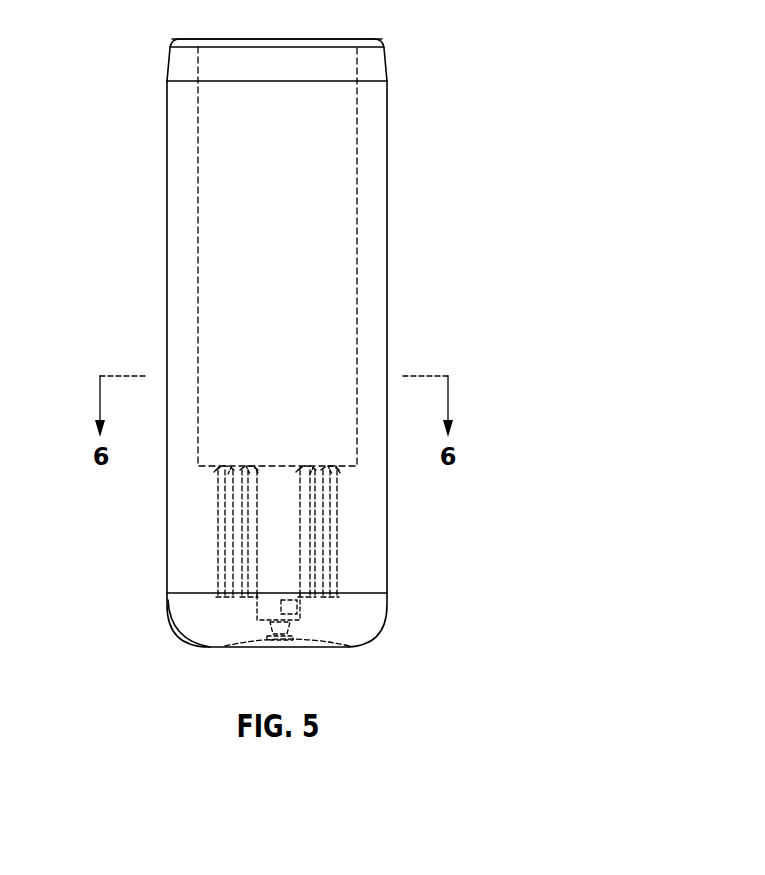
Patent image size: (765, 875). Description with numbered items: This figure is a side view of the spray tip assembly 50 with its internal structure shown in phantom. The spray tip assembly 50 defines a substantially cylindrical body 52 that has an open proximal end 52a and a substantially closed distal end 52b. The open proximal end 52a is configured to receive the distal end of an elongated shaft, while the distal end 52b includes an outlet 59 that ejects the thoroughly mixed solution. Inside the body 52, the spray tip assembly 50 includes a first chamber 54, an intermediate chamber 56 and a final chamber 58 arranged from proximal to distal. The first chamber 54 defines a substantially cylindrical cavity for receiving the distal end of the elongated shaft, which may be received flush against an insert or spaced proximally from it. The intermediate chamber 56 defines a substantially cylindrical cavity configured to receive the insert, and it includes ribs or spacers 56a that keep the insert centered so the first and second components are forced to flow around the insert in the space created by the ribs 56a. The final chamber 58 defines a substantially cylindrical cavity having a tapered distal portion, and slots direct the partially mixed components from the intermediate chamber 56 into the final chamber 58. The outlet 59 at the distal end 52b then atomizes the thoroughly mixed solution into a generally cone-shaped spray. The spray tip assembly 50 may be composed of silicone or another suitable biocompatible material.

The spray tip assembly 50 is at (299, 359).
The cylindrical body 52 is at (168, 253).
The open proximal end 52a is at (385, 58).
The closed distal end 52b is at (176, 630).
The first chamber 54 is at (349, 268).
The intermediate chamber 56 is at (218, 490).
The ribs 56a is at (218, 530).
The final chamber 58 is at (322, 598).
The outlet 59 is at (273, 656).